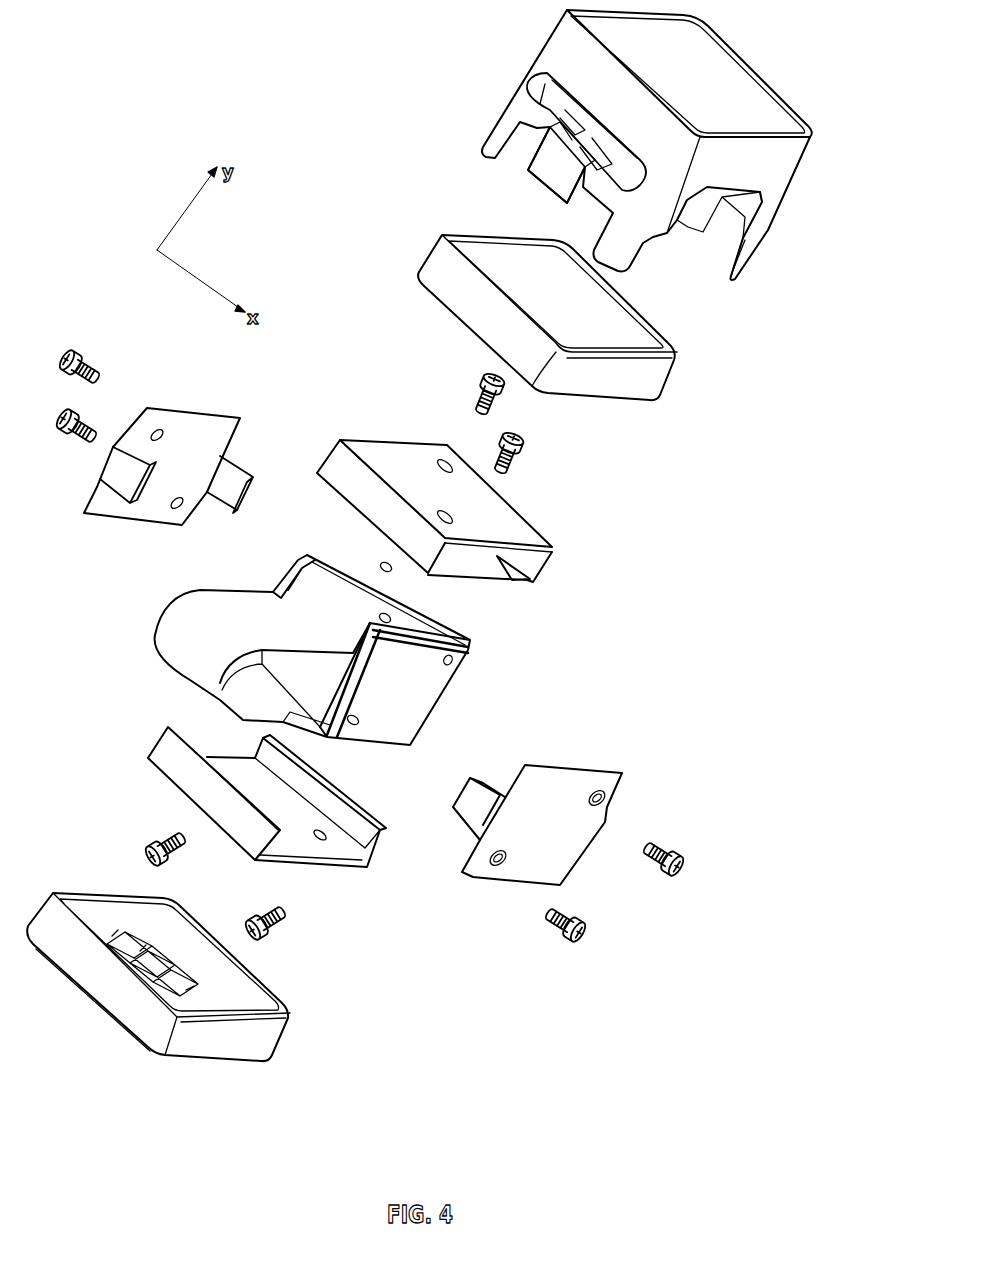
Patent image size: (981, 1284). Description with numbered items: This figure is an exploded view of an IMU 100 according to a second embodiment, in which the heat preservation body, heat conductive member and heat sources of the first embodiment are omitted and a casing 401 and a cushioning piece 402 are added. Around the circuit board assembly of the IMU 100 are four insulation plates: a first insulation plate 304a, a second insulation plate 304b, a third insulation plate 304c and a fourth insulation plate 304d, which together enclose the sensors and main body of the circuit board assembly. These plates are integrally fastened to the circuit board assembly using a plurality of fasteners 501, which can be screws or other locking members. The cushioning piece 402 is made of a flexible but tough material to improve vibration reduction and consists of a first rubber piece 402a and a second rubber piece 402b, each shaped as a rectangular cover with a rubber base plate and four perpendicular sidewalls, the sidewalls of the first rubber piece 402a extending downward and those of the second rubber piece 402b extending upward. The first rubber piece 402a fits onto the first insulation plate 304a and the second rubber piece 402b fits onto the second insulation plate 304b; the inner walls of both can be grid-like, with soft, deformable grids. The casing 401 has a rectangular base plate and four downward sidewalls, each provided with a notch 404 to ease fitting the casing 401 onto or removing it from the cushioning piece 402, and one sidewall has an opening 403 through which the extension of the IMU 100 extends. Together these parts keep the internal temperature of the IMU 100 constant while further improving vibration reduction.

The IMU 100 is at (248, 610).
The first insulation plate 304a is at (502, 527).
The second insulation plate 304b is at (297, 843).
The third insulation plate 304c is at (180, 445).
The fourth insulation plate 304d is at (567, 837).
The casing 401 is at (613, 167).
The cushioning piece 402 is at (420, 557).
The first rubber piece 402a is at (438, 273).
The second rubber piece 402b is at (128, 1000).
The opening 403 is at (534, 110).
The notch 404 is at (540, 196).
The fasteners 501 is at (497, 457).